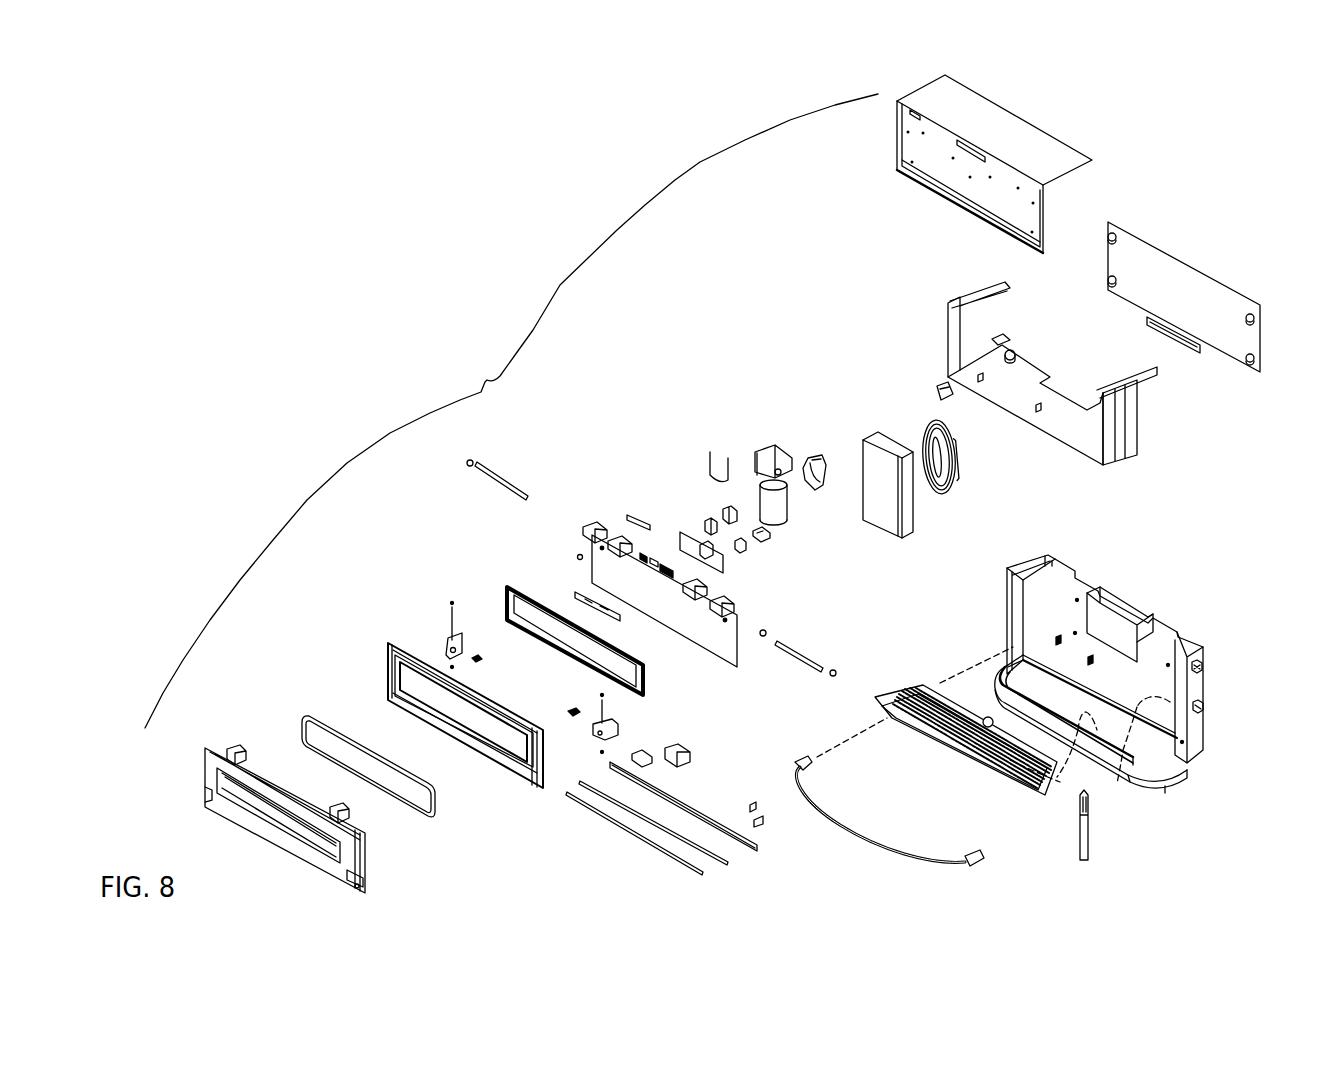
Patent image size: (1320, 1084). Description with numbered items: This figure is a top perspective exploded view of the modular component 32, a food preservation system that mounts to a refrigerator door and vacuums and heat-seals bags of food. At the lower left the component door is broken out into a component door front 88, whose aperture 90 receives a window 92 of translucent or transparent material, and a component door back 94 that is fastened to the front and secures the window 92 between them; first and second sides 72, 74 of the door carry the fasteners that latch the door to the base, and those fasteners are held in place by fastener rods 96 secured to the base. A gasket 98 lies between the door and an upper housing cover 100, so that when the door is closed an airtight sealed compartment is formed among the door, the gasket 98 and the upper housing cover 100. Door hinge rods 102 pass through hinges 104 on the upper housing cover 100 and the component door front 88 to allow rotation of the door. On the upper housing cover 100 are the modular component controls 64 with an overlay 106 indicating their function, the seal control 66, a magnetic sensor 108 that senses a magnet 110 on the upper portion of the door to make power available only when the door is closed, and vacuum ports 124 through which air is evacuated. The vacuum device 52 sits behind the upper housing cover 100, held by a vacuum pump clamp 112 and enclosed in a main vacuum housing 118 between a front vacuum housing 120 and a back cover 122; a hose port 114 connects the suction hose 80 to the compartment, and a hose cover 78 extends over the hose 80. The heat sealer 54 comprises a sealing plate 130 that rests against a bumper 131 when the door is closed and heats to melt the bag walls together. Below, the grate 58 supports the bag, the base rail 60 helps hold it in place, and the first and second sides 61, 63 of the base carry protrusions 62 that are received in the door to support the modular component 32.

The modular component 32 is at (511, 411).
The vacuum device 52 is at (787, 498).
The heat sealer 54 is at (664, 799).
The grate 58 is at (995, 798).
The base rail 60 is at (900, 843).
The first side 61 is at (1030, 560).
The protrusions 62 is at (1205, 668).
The second side 63 is at (1123, 653).
The modular component controls 64 is at (662, 560).
The seal control 66 is at (660, 572).
The first side 72 is at (282, 808).
The second side 74 is at (355, 860).
The hose cover 78 is at (885, 515).
The suction hose 80 is at (957, 477).
The component door front 88 is at (270, 772).
The aperture 90 is at (270, 810).
The window 92 is at (416, 800).
The component door back 94 is at (542, 785).
The fastener rods 96 is at (448, 635).
The gasket 98 is at (643, 690).
The upper housing cover 100 is at (755, 660).
The door hinge rods 102 is at (500, 475).
The hinges 104 is at (620, 540).
The overlay 106 is at (612, 617).
The magnetic sensor 108 is at (637, 512).
The magnet 110 is at (577, 557).
The vacuum pump clamp 112 is at (810, 455).
The hose port 114 is at (934, 390).
The main vacuum housing 118 is at (1112, 468).
The front vacuum housing 120 is at (932, 165).
The back cover 122 is at (1235, 335).
The vacuum ports 124 is at (601, 548).
The sealing plate 130 is at (650, 848).
The bumper 131 is at (620, 812).